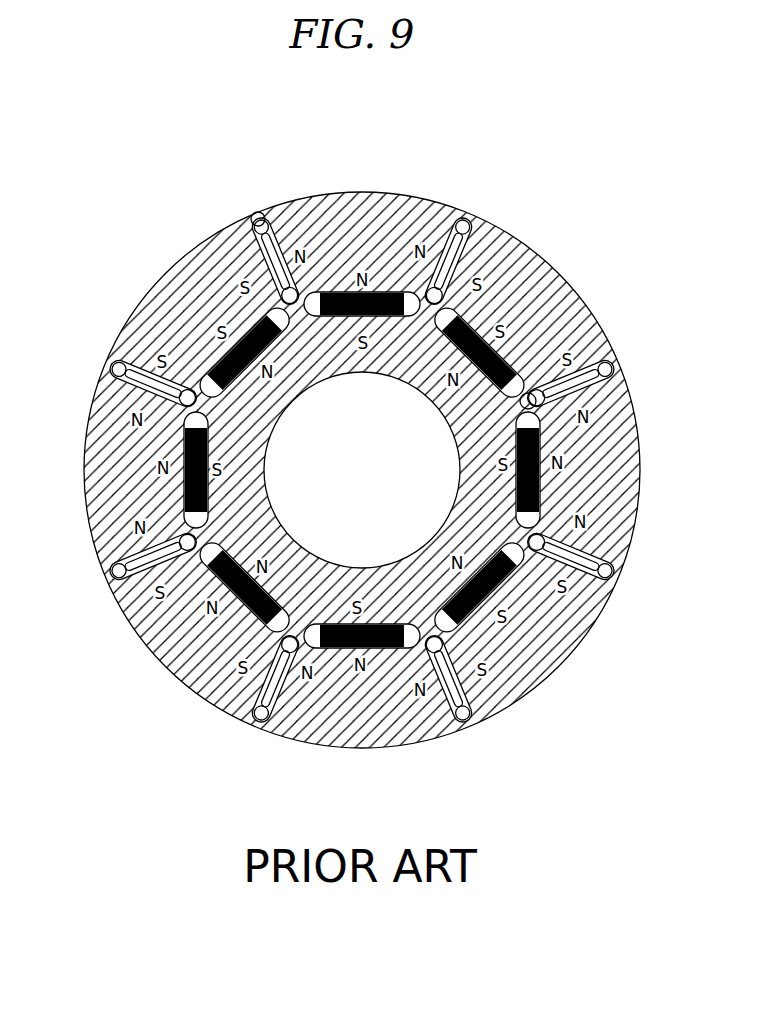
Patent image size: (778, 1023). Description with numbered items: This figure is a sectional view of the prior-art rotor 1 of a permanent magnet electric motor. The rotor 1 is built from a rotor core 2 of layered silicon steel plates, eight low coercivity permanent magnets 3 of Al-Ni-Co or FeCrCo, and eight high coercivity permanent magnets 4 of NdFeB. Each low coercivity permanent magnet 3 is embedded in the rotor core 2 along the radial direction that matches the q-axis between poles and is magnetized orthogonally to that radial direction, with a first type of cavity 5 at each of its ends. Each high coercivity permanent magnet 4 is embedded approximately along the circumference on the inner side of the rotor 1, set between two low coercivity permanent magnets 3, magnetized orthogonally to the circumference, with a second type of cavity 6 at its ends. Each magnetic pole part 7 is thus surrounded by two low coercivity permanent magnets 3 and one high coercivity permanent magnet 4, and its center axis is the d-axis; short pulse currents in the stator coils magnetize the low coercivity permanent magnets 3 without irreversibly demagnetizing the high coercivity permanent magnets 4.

The rotor 1 is at (132, 289).
The rotor core 2 is at (317, 375).
The low coercivity permanent magnet 3 is at (276, 228).
The high coercivity permanent magnet 4 is at (522, 375).
The first type of cavity 5 is at (254, 228).
The second type of cavity 6 is at (560, 362).
The magnetic pole part 7 is at (352, 232).